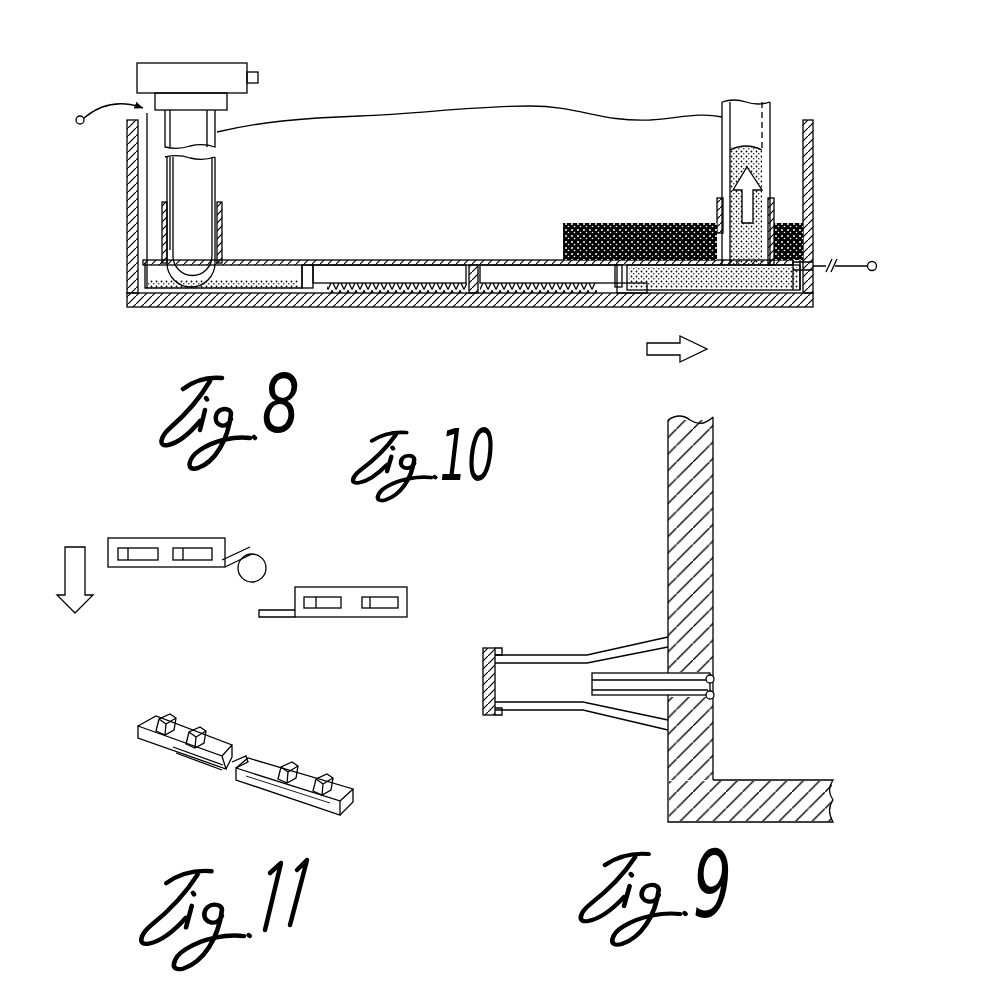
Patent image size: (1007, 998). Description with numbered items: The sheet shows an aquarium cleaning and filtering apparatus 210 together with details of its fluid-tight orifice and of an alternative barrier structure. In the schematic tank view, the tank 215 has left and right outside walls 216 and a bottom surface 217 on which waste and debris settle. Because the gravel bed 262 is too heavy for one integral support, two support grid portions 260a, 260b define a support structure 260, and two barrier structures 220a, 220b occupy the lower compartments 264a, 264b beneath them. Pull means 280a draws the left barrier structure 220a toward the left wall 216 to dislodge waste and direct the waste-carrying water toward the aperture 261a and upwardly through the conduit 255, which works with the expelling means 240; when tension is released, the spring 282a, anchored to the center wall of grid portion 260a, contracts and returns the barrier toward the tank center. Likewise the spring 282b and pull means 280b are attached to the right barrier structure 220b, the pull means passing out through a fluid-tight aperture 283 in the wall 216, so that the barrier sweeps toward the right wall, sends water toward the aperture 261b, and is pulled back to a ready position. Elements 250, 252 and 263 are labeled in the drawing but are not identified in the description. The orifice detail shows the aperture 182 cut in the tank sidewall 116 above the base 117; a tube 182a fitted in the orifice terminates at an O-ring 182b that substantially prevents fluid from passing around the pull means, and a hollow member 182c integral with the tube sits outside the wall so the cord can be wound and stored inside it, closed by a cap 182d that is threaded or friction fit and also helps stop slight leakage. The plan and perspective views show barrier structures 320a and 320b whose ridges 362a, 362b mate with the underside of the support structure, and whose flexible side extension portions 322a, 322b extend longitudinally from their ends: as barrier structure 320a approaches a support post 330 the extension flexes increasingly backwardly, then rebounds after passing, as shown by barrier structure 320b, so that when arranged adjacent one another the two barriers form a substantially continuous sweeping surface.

In FIG. 8, the apparatus 210 is at (183, 345).
In FIG. 8, the container 215 is at (468, 238).
In FIG. 8, the outside wall 216 is at (127, 221).
In FIG. 8, the bottom surface 217 is at (387, 307).
In FIG. 8, the barrier structure 220a is at (318, 280).
In FIG. 8, the barrier structure 220b is at (605, 279).
In FIG. 8, the expelling means 240 is at (467, 182).
In FIG. 8, the sensor housing 250 is at (130, 72).
In FIG. 8, the sensor stem 252 is at (153, 87).
In FIG. 8, the conduit 255 is at (217, 183).
In FIG. 8, the support structure 260 is at (474, 258).
In FIG. 8, the support grid portion 260a is at (384, 276).
In FIG. 8, the support grid portion 260b is at (550, 258).
In FIG. 8, the aperture 261a is at (190, 265).
In FIG. 8, the aperture 261b is at (745, 258).
In FIG. 8, the gravel bed 262 is at (605, 230).
In FIG. 8, the sleeve 263 is at (173, 230).
In FIG. 8, the lower compartment 264a is at (397, 276).
In FIG. 8, the lower compartment 264b is at (525, 258).
In FIG. 8, the pull means 280a is at (85, 128).
In FIG. 8, the pull means 280b is at (742, 300).
In FIG. 8, the spring 282a is at (428, 307).
In FIG. 8, the spring 282b is at (527, 307).
In FIG. 8, the fluid-tight aperture 283 is at (824, 254).
In FIG. 10, the barrier structure 320a is at (209, 524).
In FIG. 11, the barrier structure 320a is at (146, 758).
In FIG. 10, the barrier structure 320b is at (333, 586).
In FIG. 11, the barrier structure 320b is at (334, 760).
In FIG. 10, the side extension portion 322a is at (233, 552).
In FIG. 11, the side extension portion 322a is at (210, 768).
In FIG. 10, the side extension portion 322b is at (264, 633).
In FIG. 11, the side extension portion 322b is at (240, 760).
In FIG. 10, the support post 330 is at (270, 557).
In FIG. 10, the ridges 362a is at (195, 552).
In FIG. 11, the ridges 362a is at (183, 693).
In FIG. 10, the ridges 362b is at (385, 602).
In FIG. 11, the ridges 362b is at (325, 783).
In FIG. 9, the sidewall 116 is at (714, 485).
In FIG. 9, the base 117 is at (733, 778).
In FIG. 9, the aperture 182 is at (624, 679).
In FIG. 9, the tube 182a is at (623, 672).
In FIG. 9, the O-ring 182b is at (717, 681).
In FIG. 9, the hollow member 182c is at (555, 720).
In FIG. 9, the cap 182d is at (483, 687).